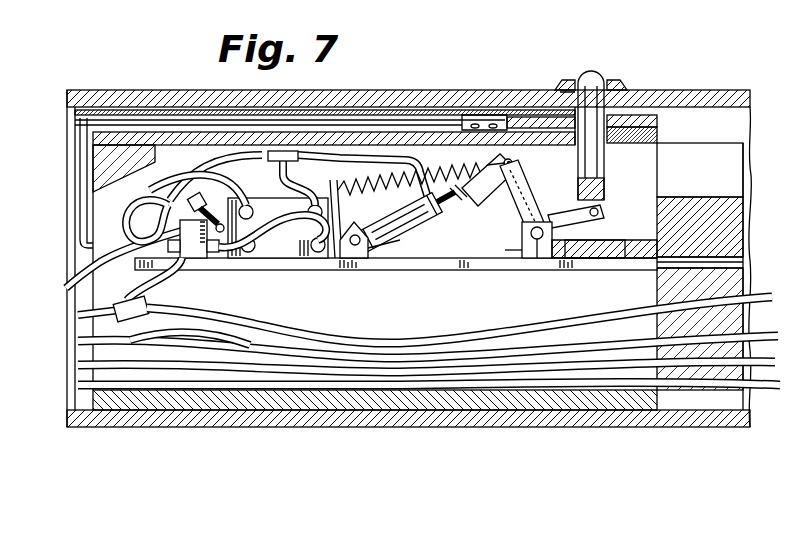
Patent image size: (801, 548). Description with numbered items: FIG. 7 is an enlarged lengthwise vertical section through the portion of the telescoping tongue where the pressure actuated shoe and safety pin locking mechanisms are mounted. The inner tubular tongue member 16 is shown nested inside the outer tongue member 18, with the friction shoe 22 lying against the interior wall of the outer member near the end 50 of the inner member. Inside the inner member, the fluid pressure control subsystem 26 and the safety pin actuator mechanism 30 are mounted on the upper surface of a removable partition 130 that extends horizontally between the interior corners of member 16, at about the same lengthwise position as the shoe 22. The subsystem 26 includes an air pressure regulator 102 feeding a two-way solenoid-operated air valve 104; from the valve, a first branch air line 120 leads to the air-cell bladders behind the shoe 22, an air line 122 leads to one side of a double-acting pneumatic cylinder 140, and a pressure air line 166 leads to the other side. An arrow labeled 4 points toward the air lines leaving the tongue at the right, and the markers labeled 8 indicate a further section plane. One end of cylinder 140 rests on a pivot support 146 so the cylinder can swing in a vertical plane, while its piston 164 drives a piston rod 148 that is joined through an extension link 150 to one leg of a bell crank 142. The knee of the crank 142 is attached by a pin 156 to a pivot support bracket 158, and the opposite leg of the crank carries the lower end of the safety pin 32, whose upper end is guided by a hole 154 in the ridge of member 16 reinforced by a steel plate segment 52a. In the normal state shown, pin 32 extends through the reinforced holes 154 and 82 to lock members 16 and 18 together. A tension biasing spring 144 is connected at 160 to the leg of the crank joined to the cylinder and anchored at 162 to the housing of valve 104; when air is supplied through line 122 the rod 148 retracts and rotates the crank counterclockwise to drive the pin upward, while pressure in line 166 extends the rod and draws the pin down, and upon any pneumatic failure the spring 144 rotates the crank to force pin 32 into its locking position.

The fluid tubes 4 is at (770, 330).
The section line 8- 8 is at (592, 62).
The inner tubular tongue member 16 is at (135, 132).
The tongue member 18 is at (742, 96).
The friction shoe 22 is at (380, 110).
The fluid pressure control subsystem 26 is at (168, 160).
The safety pin locking mechanism 30 is at (622, 228).
The safety pin 32 is at (600, 76).
The end 50 is at (660, 148).
The steel plate segment 52a is at (658, 120).
The reinforced hole 82 is at (576, 80).
The air pressure regulator 102 is at (200, 258).
The solenoid-operated air valve 104 is at (275, 258).
The first branch air line 120 is at (252, 160).
The air line 122 is at (416, 164).
The removable partition 130 is at (445, 270).
The double-acting pneumatic cylinder 140 is at (400, 232).
The bell crank 142 is at (528, 208).
The tension biasing spring 144 is at (512, 162).
The pivot support 146 is at (352, 258).
The piston rod 148 is at (450, 214).
The extension link 150 is at (494, 204).
The hole 154 is at (608, 108).
The pin 156 is at (545, 258).
The pivot support bracket 158 is at (522, 258).
The spring connection point 160 is at (522, 180).
The spring anchor point 162 is at (336, 258).
The piston 164 is at (386, 250).
The pressure air line 166 is at (362, 196).